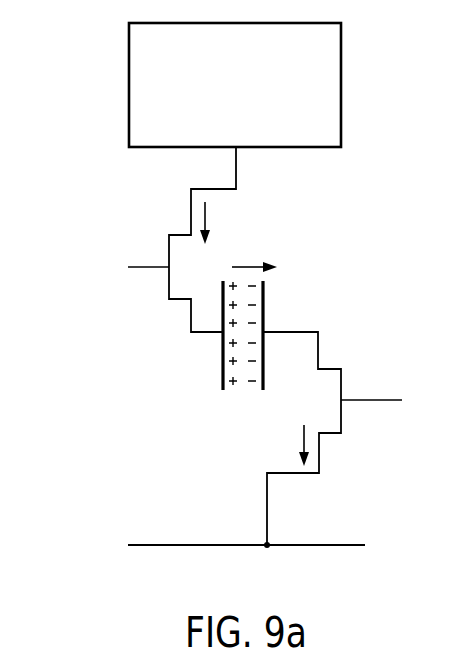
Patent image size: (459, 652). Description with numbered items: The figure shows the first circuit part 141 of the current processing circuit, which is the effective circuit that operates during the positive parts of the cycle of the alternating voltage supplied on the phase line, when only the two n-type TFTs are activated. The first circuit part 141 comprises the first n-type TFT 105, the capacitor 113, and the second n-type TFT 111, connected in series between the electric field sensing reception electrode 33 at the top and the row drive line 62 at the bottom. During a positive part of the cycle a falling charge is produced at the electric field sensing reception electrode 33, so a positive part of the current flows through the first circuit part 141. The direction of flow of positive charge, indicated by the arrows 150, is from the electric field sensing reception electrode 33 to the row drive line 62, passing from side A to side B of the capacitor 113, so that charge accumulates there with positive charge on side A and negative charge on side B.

The electric field sensing reception electrode 33 is at (328, 80).
The first n-type TFT 105 is at (169, 248).
The capacitor 113 is at (222, 350).
The second n-type TFT 111 is at (343, 421).
The arrows 150 is at (249, 265).
The row drive line 62 is at (178, 546).
The first circuit part 141 is at (105, 416).